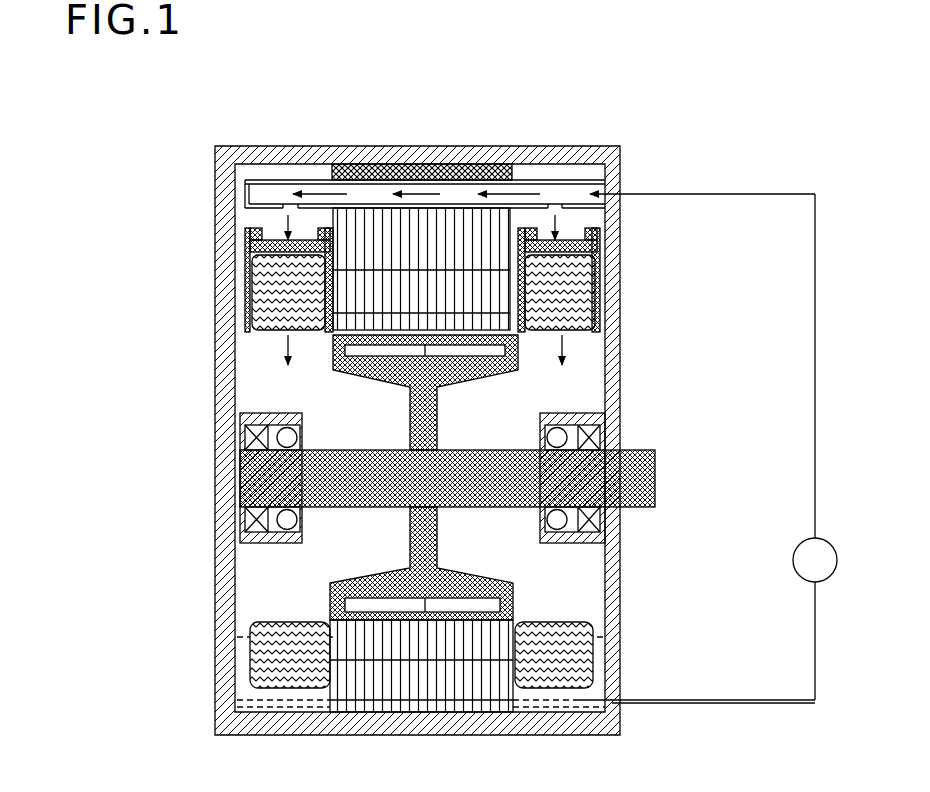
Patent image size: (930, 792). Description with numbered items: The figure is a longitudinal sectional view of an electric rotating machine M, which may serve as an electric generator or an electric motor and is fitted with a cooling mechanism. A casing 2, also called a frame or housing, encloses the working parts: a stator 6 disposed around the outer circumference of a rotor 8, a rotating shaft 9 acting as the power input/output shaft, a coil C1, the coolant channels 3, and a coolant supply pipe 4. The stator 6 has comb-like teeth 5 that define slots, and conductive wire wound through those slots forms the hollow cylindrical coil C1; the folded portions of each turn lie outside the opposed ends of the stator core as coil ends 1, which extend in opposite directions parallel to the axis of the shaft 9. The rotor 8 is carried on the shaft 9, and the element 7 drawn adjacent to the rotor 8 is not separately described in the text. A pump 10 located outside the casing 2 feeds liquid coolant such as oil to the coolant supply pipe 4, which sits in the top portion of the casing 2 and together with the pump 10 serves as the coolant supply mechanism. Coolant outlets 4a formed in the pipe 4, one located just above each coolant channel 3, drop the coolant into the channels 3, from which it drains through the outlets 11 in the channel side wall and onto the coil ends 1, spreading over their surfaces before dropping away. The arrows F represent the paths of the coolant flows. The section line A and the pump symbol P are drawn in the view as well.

The coil end 1 is at (252, 290).
The casing 2 is at (215, 400).
The coolant channel 3 is at (245, 250).
The coolant supply pipe 4 is at (386, 180).
The coolant outlet 4a is at (290, 180).
The teeth 5 is at (547, 500).
The stator 6 is at (421, 460).
The rotor disc 7 is at (600, 390).
The rotor 8 is at (600, 410).
The rotating shaft 9 is at (655, 478).
The pump 10 is at (707, 448).
The outlet 11 is at (252, 230).
The electric rotating machine M is at (370, 78).
The arrows F is at (440, 164).
The pump P is at (795, 575).
The section line A- A is at (283, 215).
The coil C1 is at (352, 376).